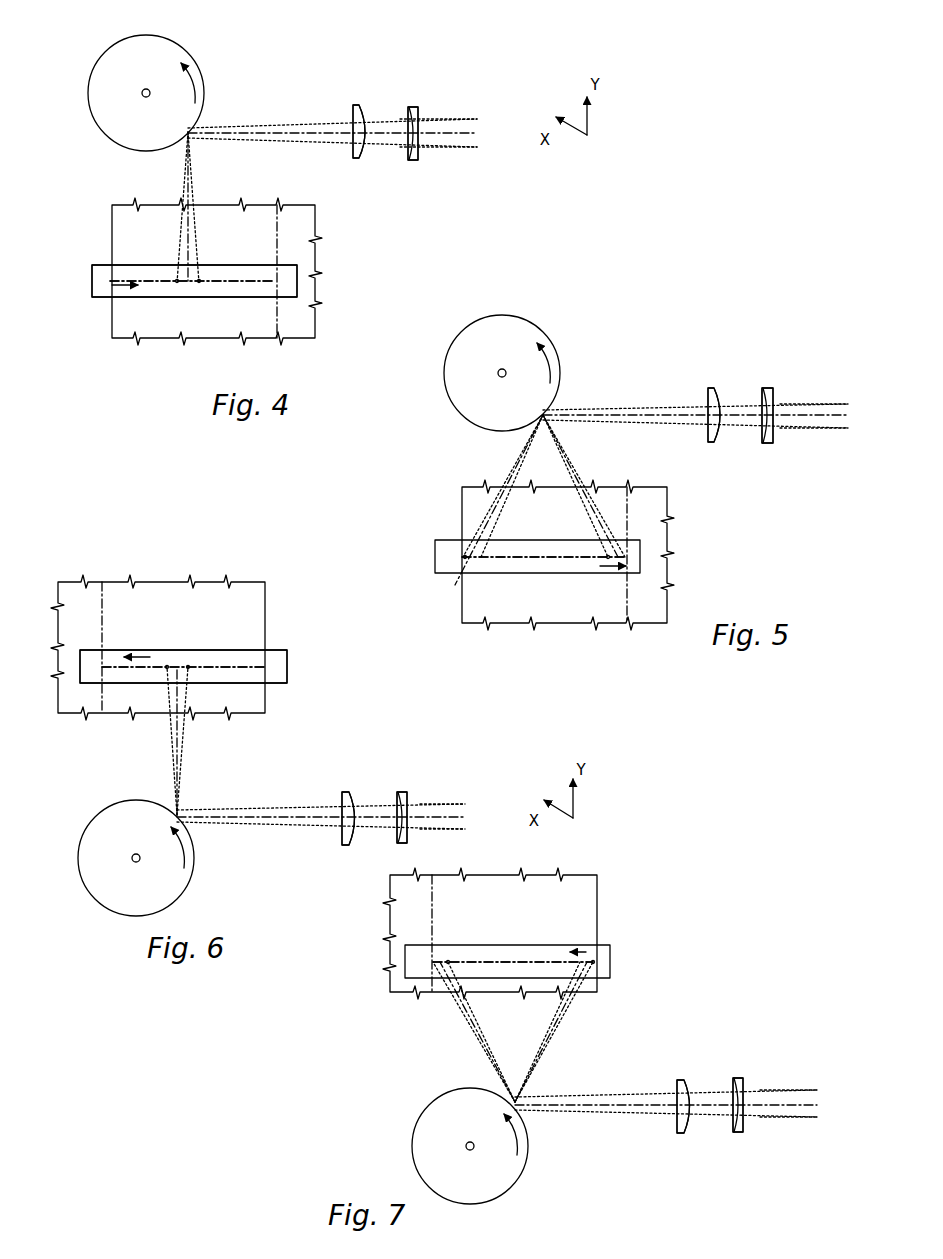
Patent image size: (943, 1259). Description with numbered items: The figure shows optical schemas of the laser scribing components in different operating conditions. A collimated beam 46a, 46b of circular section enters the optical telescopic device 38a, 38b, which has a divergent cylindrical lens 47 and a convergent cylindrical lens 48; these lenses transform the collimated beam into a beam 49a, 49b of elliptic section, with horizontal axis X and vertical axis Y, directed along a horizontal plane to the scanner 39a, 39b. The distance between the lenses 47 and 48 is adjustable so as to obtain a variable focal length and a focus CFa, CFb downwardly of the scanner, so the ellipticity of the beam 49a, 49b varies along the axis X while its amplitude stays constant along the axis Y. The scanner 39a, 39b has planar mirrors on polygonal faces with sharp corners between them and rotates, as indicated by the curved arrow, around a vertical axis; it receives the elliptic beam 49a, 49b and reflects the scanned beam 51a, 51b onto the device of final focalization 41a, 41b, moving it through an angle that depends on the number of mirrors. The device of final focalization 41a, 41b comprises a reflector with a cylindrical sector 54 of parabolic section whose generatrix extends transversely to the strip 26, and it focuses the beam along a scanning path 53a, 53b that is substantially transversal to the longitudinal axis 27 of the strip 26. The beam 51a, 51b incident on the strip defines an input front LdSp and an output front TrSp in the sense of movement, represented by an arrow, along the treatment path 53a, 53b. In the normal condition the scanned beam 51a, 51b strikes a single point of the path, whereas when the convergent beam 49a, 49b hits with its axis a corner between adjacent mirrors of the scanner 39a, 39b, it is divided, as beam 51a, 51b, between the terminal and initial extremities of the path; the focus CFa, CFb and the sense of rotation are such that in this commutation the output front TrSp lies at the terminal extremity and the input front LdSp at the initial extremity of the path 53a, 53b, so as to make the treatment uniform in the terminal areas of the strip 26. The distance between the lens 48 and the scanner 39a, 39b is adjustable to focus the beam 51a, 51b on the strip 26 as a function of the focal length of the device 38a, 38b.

In FIG. 4, the strip 26 is at (117, 331).
In FIG. 5, the strip 26 is at (668, 532).
In FIG. 6, the strip 26 is at (245, 585).
In FIG. 7, the strip 26 is at (500, 924).
In FIG. 4, the longitudinal axis 27 is at (281, 323).
In FIG. 5, the longitudinal axis 27 is at (629, 523).
In FIG. 6, the longitudinal axis 27 is at (104, 633).
In FIG. 7, the longitudinal axis 27 is at (433, 922).
In FIG. 6, the optical telescopic device 38a is at (417, 762).
In FIG. 7, the optical telescopic device 38a is at (754, 1067).
In FIG. 4, the optical telescopic device 38b is at (417, 86).
In FIG. 5, the optical telescopic device 38b is at (772, 369).
In FIG. 6, the scanner 39a is at (100, 803).
In FIG. 7, the scanner 39a is at (410, 1113).
In FIG. 4, the scanner 39b is at (214, 68).
In FIG. 5, the scanner 39b is at (566, 352).
In FIG. 6, the device of final focalization 41a is at (299, 655).
In FIG. 4, the device of final focalization 41b is at (299, 253).
In FIG. 6, the collimated beam 46a is at (448, 808).
In FIG. 7, the collimated beam 46a is at (788, 1115).
In FIG. 4, the collimated beam 46b is at (464, 147).
In FIG. 5, the collimated beam 46b is at (817, 428).
In FIG. 4, the cylindrical lens 47 is at (413, 161).
In FIG. 5, the cylindrical lens 47 is at (764, 443).
In FIG. 6, the cylindrical lens 47 is at (398, 842).
In FIG. 7, the cylindrical lens 47 is at (739, 1132).
In FIG. 4, the cylindrical lens 48 is at (355, 158).
In FIG. 5, the cylindrical lens 48 is at (712, 392).
In FIG. 6, the cylindrical lens 48 is at (343, 797).
In FIG. 7, the cylindrical lens 48 is at (680, 1131).
In FIG. 6, the beam of elliptic section 49a is at (240, 808).
In FIG. 7, the beam of elliptic section 49a is at (613, 1114).
In FIG. 4, the beam of elliptic section 49b is at (277, 121).
In FIG. 5, the beam of elliptic section 49b is at (622, 410).
In FIG. 6, the scanned beam 51a is at (172, 742).
In FIG. 7, the scanned beam 51a is at (466, 1020).
In FIG. 4, the scanned beam 51b is at (183, 249).
In FIG. 5, the scanned beam 51b is at (482, 523).
In FIG. 6, the scanning path 53a is at (247, 660).
In FIG. 7, the scanning path 53a is at (532, 963).
In FIG. 4, the scanning path 53b is at (238, 278).
In FIG. 5, the scanning path 53b is at (540, 558).
In FIG. 4, the cylindrical sector 54 is at (92, 270).
In FIG. 5, the cylindrical sector 54 is at (640, 567).
In FIG. 6, the cylindrical sector 54 is at (277, 680).
In FIG. 7, the cylindrical sector 54 is at (610, 965).
In FIG. 5, the focus CFa is at (512, 467).
In FIG. 6, the focus CFa is at (176, 772).
In FIG. 7, the focus CFa is at (490, 1068).
In FIG. 4, the focus CFb is at (190, 179).
In FIG. 5, the focus CFb is at (575, 459).
In FIG. 4, the output front TrSp is at (175, 278).
In FIG. 5, the output front TrSp is at (604, 548).
In FIG. 6, the output front TrSp is at (188, 668).
In FIG. 7, the output front TrSp is at (448, 963).
In FIG. 4, the input front LdSp is at (200, 278).
In FIG. 5, the input front LdSp is at (464, 548).
In FIG. 6, the input front LdSp is at (167, 667).
In FIG. 7, the input front LdSp is at (592, 965).